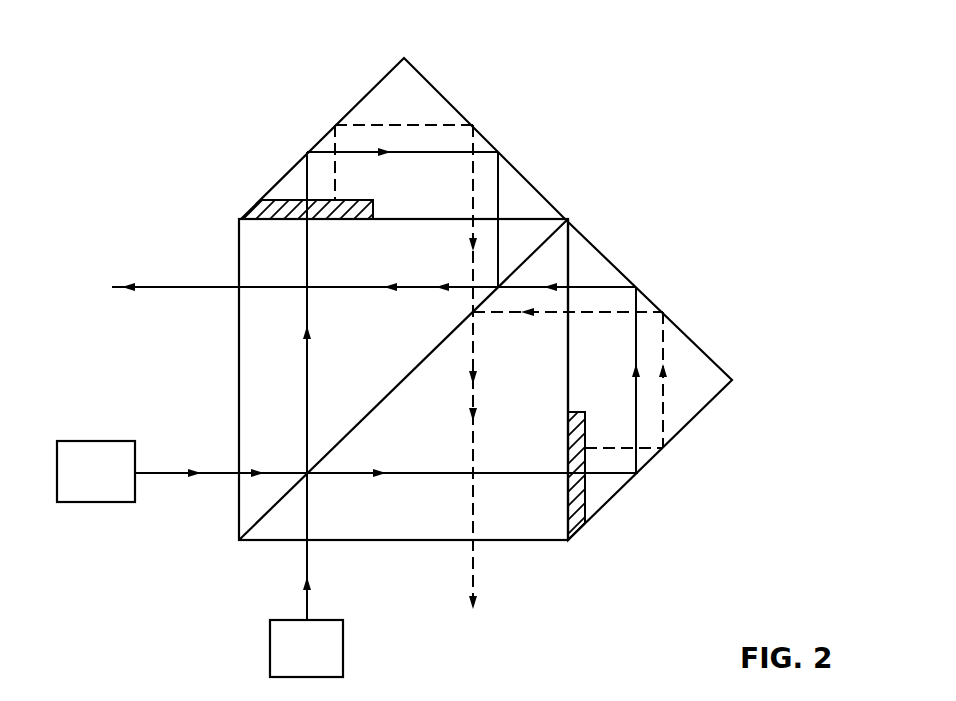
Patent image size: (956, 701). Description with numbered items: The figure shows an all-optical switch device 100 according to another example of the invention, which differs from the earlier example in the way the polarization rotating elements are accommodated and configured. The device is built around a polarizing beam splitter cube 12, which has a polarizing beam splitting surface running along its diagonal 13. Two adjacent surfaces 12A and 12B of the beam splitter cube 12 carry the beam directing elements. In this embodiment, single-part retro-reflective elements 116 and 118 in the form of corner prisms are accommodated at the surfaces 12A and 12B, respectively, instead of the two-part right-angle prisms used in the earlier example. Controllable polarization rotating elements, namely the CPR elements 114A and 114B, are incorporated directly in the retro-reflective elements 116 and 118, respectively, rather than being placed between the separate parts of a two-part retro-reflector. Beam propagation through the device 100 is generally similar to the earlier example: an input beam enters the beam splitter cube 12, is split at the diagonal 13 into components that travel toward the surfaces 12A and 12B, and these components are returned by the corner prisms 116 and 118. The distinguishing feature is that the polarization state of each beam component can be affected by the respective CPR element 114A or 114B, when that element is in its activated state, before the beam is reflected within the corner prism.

The all-optical switch device 100 is at (247, 120).
The polarizing beam splitter cube 12 is at (273, 262).
The surface of the beam splitter cube 12A is at (527, 219).
The surface of the beam splitter cube 12B is at (568, 386).
The diagonal 13 is at (263, 508).
The CPR element 114A is at (295, 198).
The CPR element 114B is at (586, 488).
The retro-reflective element 116 is at (373, 88).
The retro-reflective element 118 is at (706, 352).